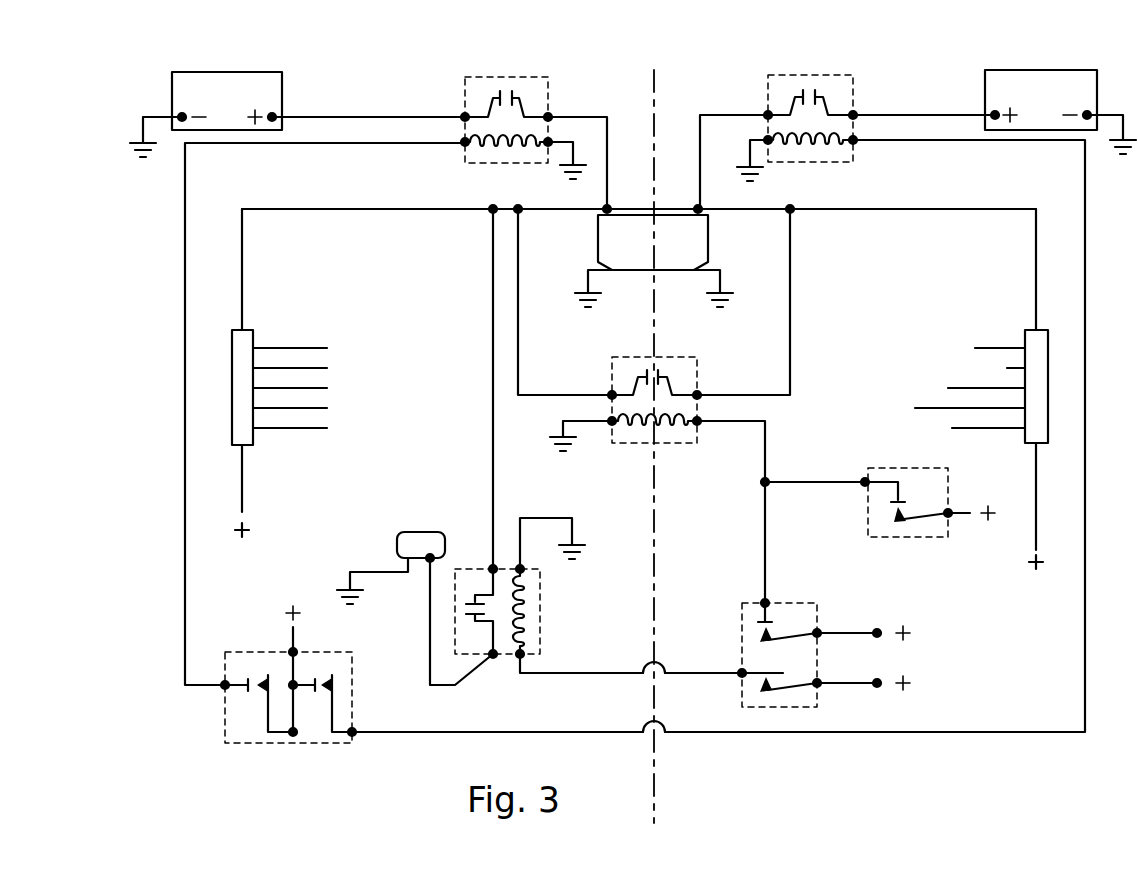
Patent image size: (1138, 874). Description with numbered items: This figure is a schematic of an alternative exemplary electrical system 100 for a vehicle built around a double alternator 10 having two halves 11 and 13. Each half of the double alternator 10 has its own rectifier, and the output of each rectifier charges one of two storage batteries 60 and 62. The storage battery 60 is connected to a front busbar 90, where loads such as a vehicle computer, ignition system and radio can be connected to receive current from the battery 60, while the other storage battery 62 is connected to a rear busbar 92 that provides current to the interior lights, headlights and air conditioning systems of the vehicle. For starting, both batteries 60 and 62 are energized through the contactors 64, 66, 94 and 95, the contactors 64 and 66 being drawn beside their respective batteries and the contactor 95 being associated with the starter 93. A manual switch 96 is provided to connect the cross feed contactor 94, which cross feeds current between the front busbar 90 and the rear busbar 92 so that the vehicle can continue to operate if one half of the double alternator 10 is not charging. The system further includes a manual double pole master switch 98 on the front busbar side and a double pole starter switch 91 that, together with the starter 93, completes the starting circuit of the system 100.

The electrical system 100 is at (709, 56).
The double alternator 10 is at (675, 214).
The first half of double alternator 11 is at (636, 252).
The second half of double alternator 13 is at (692, 252).
The storage battery 60 is at (211, 82).
The storage battery 62 is at (1040, 82).
The contactor 64 is at (492, 82).
The contactor 66 is at (838, 86).
The front busbar 90 is at (248, 340).
The double pole starter switch 91 is at (762, 660).
The rear busbar 92 is at (1030, 336).
The starter 93 is at (404, 546).
The cross feed contactor 94 is at (702, 392).
The contactor 95 is at (495, 620).
The manual switch 96 is at (930, 526).
The manual double pole master switch 98 is at (260, 730).